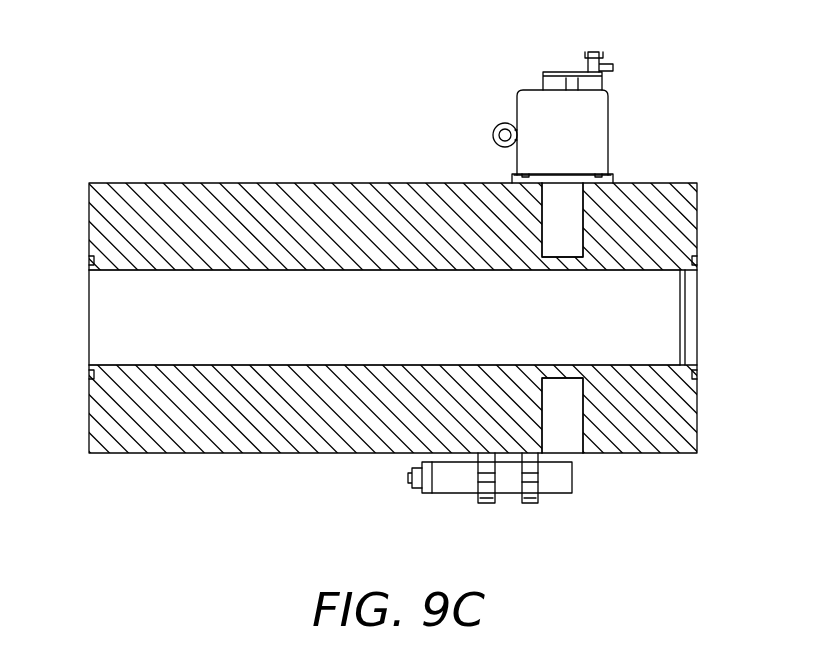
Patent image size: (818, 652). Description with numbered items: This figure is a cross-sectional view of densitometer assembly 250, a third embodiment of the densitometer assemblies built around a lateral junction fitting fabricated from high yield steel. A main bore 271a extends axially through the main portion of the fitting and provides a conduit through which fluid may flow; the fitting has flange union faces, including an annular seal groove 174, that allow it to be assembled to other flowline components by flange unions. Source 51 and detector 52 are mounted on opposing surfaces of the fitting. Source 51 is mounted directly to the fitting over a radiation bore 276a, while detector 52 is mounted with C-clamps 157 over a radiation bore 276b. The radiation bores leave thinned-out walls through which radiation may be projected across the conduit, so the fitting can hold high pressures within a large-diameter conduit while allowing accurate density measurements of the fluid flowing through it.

The densitometer assembly 250 is at (127, 90).
The source 51 is at (540, 100).
The detector 52 is at (552, 483).
The C-clamps 157 is at (483, 503).
The annular seal groove 174 is at (697, 259).
The main bore 271a is at (123, 311).
The radiation bore 276a is at (564, 213).
The radiation bore 276b is at (571, 440).